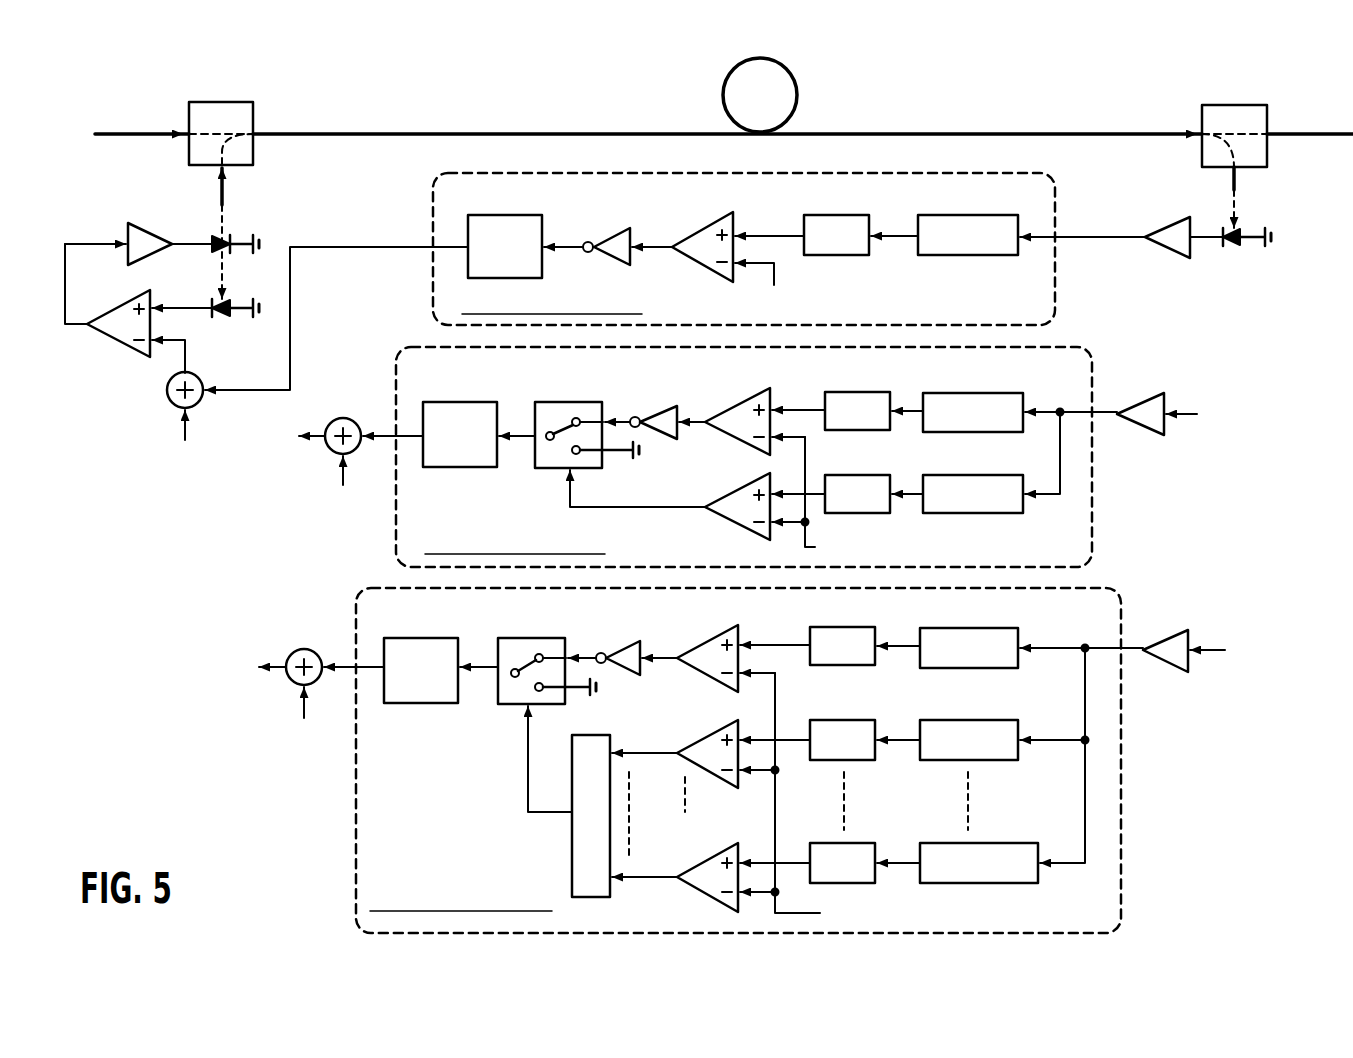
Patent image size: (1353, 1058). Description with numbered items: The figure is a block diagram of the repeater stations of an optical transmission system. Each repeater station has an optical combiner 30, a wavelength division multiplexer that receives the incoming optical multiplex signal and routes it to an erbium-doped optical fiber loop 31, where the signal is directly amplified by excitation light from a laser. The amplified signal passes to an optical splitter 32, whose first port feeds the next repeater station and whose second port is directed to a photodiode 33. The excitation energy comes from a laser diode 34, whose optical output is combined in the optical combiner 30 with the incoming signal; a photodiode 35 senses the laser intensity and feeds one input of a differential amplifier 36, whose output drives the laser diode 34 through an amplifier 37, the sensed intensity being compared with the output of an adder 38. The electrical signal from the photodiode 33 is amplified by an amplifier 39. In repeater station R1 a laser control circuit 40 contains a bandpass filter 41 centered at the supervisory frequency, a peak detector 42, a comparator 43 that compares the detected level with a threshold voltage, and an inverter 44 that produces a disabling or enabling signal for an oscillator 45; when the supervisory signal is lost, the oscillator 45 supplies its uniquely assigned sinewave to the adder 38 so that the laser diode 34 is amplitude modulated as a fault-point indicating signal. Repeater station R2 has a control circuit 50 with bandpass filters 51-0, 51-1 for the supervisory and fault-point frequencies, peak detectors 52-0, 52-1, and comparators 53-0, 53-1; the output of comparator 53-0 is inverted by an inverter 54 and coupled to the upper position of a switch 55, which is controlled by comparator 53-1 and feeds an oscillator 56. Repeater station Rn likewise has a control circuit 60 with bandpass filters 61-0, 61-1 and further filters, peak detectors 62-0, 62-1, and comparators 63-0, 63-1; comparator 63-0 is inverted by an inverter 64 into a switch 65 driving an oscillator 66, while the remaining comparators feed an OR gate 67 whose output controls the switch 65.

The optical combiner 30 is at (220, 102).
The erbium-doped optical fiber loop 31 is at (797, 104).
The optical splitter 32 is at (1234, 105).
The photodiode 33 is at (1232, 247).
The laser diode 34 is at (226, 237).
The photodiode 35 is at (226, 301).
The differential amplifier 36 is at (143, 292).
The amplifier 37 is at (146, 226).
The adder 38 is at (197, 374).
The amplifier 39 is at (1168, 217).
The laser control circuit 40 is at (1033, 178).
The bandpass filter 41 is at (948, 215).
The peak detector 42 is at (838, 215).
The comparator 43 is at (707, 229).
The inverter 44 is at (616, 232).
The oscillator 45 is at (505, 215).
The control circuit 50 is at (1068, 352).
The bandpass filter 51-0 is at (957, 393).
The bandpass filter 51-1 is at (955, 475).
The peak detector 52-0 is at (842, 392).
The peak detector 52-1 is at (842, 475).
The comparator 53-0 is at (752, 394).
The comparator 53-1 is at (752, 487).
The inverter 54 is at (666, 407).
The switch 55 is at (558, 402).
The oscillator 56 is at (460, 402).
The control circuit 60 is at (1103, 592).
The bandpass filter 61-0 is at (955, 628).
The bandpass filter 61-1 is at (950, 720).
The peak detector 62-0 is at (834, 627).
The peak detector 62-1 is at (830, 720).
The comparator 63-0 is at (722, 636).
The comparator 63-1 is at (717, 735).
The inverter 64 is at (637, 645).
The switch 65 is at (528, 638).
The oscillator 66 is at (420, 638).
The OR gate 67 is at (590, 735).